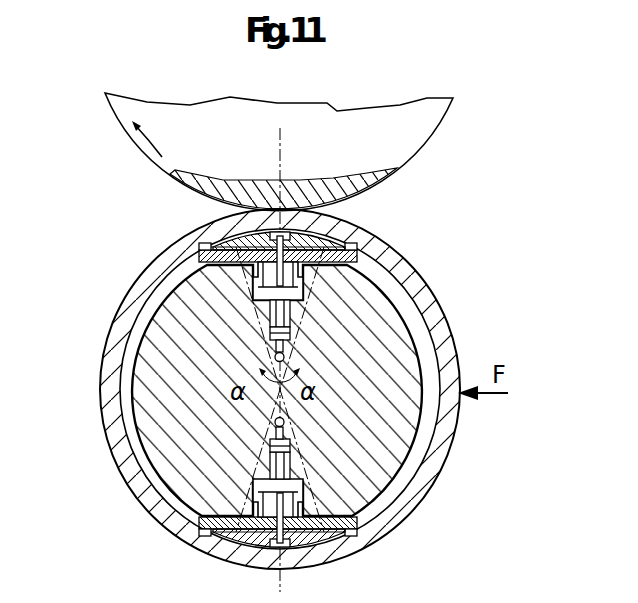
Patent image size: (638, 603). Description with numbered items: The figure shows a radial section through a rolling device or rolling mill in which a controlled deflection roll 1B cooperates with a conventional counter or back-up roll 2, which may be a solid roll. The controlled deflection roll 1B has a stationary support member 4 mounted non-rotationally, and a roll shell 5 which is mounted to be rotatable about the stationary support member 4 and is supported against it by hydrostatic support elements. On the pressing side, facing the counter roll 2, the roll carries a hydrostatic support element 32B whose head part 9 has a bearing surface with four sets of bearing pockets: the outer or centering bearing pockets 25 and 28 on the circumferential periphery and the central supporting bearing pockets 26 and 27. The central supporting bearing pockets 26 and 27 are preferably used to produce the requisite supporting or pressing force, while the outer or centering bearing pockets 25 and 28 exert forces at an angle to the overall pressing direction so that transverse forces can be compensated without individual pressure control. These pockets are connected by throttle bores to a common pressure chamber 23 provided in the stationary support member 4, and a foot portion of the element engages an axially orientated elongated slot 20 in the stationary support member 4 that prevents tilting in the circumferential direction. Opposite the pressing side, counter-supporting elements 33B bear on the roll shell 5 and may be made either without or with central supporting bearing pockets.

The counter or back-up roll 2 is at (428, 118).
The stationary support member 4 is at (412, 424).
The roll shell 5 is at (438, 331).
The head part 9 is at (200, 256).
The elongated slot 20 is at (290, 335).
The pressure chamber 23 is at (255, 296).
The outer or centering bearing pocket 25 is at (200, 245).
The central supporting bearing pocket 26 is at (236, 226).
The central supporting bearing pocket 27 is at (318, 226).
The outer or centering bearing pocket 28 is at (354, 245).
The hydrostatic support element 32B is at (364, 259).
The counter-supporting element 33B is at (368, 519).
The controlled deflection roll 1B is at (452, 299).